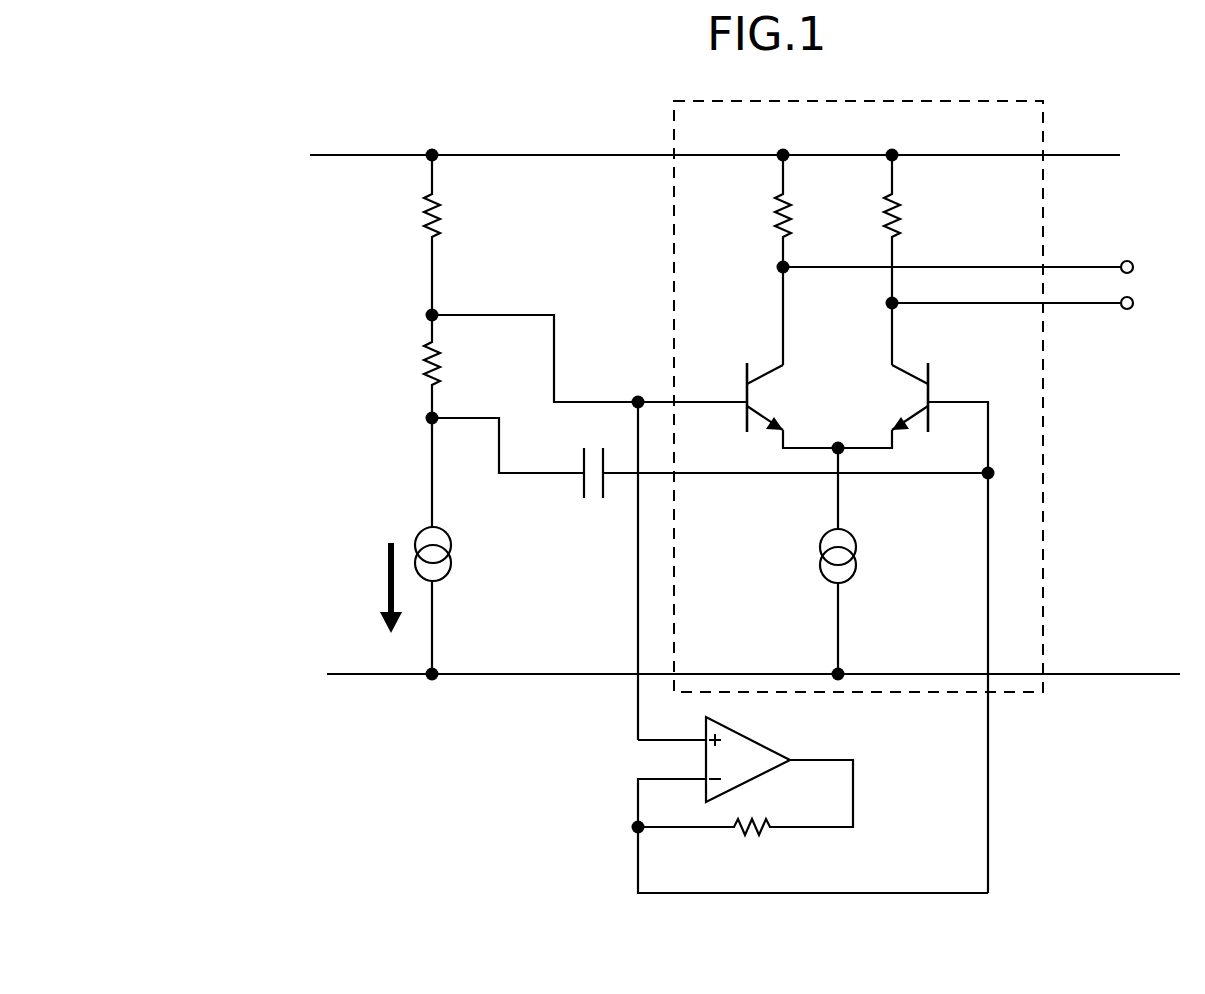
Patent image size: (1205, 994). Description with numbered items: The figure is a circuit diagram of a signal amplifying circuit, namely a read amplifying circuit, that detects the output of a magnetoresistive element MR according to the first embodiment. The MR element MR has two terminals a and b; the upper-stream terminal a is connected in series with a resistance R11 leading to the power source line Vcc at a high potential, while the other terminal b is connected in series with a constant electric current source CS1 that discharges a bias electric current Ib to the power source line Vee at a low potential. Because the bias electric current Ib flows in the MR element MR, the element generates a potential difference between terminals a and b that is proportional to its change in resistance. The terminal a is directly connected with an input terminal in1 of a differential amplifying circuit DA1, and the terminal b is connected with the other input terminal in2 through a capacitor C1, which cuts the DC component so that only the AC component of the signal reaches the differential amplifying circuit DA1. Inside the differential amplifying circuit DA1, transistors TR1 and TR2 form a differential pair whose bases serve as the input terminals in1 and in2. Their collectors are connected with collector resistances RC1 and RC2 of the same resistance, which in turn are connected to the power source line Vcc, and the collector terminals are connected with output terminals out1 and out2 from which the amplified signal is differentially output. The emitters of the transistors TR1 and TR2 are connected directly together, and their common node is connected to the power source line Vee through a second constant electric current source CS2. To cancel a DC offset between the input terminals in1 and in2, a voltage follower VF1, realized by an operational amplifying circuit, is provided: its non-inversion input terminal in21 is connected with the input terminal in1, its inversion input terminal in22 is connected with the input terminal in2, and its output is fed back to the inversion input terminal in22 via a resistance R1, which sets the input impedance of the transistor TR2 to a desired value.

The power source line at a high potential Vcc is at (679, 161).
The power source line at a low potential Vee is at (717, 674).
The resistance R11 is at (401, 235).
The magnetoresistive element MR is at (407, 366).
The terminal a is at (519, 352).
The terminal b is at (492, 440).
The constant electric current source CS1 is at (465, 546).
The bias electric current Ib is at (372, 588).
The capacitor C1 is at (780, 494).
The input terminal in1 is at (690, 557).
The input terminal in2 is at (961, 632).
The differential amplifying circuit DA1 is at (858, 380).
The collector resistance RC1 is at (752, 211).
The collector resistance RC2 is at (919, 229).
The output terminal out1 is at (986, 267).
The output terminal out2 is at (1041, 303).
The transistor TR1 is at (792, 357).
The transistor TR2 is at (883, 375).
The constant electric current source CS2 is at (865, 558).
The voltage follower VF1 is at (779, 770).
The non-inversion input terminal in21 is at (644, 740).
The inversion input terminal in22 is at (785, 830).
The resistance R1 is at (705, 847).